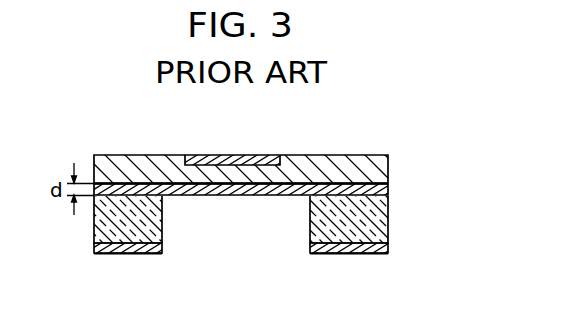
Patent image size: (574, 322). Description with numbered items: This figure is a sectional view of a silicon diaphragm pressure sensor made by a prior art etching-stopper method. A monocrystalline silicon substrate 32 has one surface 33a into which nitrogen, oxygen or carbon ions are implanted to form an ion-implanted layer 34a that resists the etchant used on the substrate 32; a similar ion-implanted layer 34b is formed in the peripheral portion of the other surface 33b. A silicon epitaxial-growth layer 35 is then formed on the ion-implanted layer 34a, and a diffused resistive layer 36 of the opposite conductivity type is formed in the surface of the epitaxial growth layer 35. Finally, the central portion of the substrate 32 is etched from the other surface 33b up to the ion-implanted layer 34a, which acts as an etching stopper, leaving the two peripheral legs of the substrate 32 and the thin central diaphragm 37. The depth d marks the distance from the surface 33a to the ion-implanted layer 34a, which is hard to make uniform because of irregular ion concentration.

The monocrystalline silicon substrate 32 is at (377, 222).
The one surface of the substrate 33a is at (380, 180).
The other surface of the substrate 33b is at (368, 253).
The ion-implanted layer 34a is at (383, 190).
The ion-implanted layer 34b is at (383, 250).
The silicon epitaxial-growth layer 35 is at (366, 170).
The diffused resistive layer 36 is at (252, 160).
The diaphragm 37 is at (245, 195).